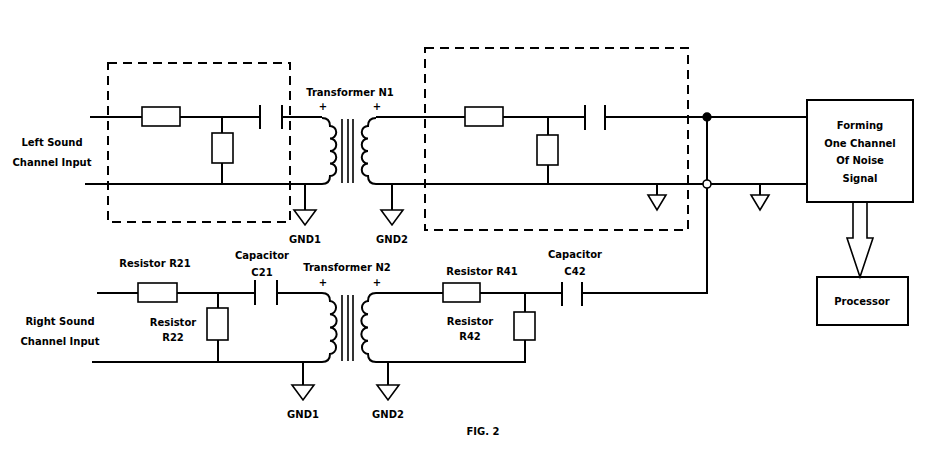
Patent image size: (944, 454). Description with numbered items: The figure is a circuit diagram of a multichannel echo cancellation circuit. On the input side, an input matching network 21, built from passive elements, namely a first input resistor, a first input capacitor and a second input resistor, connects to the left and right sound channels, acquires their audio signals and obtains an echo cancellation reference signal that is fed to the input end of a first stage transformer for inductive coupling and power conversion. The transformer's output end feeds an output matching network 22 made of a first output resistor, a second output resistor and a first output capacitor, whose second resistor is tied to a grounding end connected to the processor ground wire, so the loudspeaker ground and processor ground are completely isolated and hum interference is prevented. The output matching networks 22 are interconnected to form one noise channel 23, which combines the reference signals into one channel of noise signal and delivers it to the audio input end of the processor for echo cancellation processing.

The input matching network 21 is at (175, 63).
The output matching network 22 is at (506, 48).
The noise channel 23 is at (757, 117).